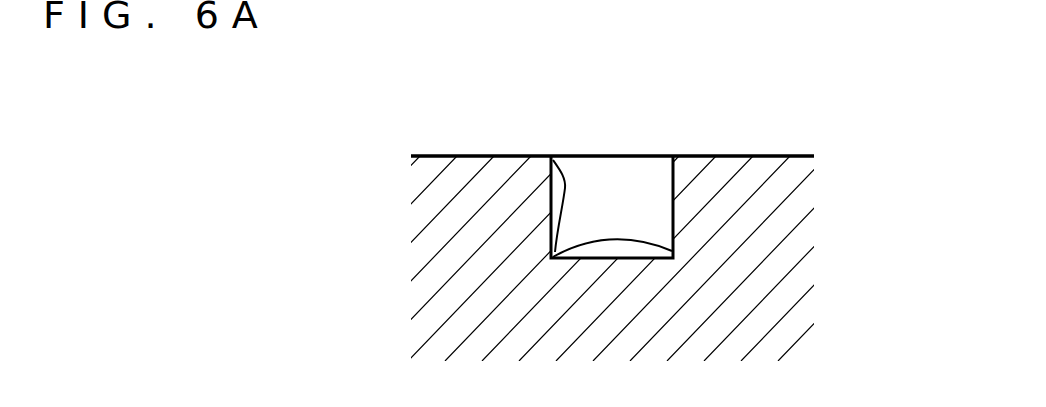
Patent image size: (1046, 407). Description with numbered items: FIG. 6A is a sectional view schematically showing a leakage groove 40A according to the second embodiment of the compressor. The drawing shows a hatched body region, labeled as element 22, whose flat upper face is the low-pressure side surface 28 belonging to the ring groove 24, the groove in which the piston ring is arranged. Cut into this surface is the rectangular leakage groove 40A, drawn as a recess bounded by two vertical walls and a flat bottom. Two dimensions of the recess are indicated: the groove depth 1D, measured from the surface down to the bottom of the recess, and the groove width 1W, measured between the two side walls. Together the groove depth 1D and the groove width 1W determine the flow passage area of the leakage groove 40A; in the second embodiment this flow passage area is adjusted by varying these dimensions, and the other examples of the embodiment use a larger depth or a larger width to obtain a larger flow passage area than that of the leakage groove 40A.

The ring groove 24 is at (413, 68).
The base material region 22 is at (463, 193).
The low-pressure side surface 28 is at (754, 157).
The leakage groove 40A is at (638, 172).
The groove width 1W is at (615, 240).
The groove depth 1D is at (568, 207).